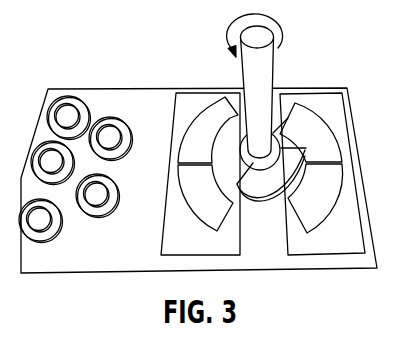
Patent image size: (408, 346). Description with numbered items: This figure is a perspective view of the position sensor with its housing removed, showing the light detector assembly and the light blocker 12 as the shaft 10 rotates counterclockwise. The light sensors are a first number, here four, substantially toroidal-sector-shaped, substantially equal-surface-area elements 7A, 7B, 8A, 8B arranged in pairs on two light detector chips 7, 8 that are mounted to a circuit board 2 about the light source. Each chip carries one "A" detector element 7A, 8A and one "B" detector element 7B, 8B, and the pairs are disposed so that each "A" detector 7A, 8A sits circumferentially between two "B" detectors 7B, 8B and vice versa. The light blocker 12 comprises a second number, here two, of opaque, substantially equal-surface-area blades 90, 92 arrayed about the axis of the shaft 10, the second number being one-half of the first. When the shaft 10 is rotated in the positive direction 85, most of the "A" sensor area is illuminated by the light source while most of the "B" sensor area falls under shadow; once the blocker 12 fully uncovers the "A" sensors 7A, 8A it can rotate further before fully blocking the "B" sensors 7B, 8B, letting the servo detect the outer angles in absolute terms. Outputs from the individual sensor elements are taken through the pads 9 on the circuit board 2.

The circuit board 2 is at (110, 263).
The light detector chip 7 is at (339, 247).
The "A" detector element 7A is at (311, 152).
The "B" detector element 7B is at (309, 212).
The light detector chip 8 is at (171, 247).
The "A" detector element 8A is at (197, 212).
The "B" detector element 8B is at (188, 160).
The pads 9 is at (25, 207).
The shaft 10 is at (250, 77).
The light blocker 12 is at (263, 206).
The positive direction 85 is at (236, 35).
The blade 90 is at (228, 138).
The blade 92 is at (269, 197).